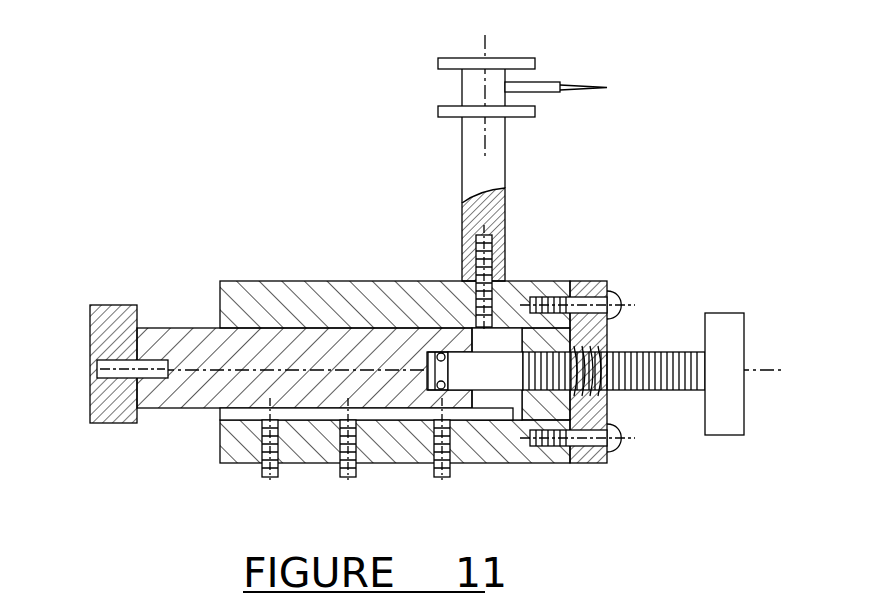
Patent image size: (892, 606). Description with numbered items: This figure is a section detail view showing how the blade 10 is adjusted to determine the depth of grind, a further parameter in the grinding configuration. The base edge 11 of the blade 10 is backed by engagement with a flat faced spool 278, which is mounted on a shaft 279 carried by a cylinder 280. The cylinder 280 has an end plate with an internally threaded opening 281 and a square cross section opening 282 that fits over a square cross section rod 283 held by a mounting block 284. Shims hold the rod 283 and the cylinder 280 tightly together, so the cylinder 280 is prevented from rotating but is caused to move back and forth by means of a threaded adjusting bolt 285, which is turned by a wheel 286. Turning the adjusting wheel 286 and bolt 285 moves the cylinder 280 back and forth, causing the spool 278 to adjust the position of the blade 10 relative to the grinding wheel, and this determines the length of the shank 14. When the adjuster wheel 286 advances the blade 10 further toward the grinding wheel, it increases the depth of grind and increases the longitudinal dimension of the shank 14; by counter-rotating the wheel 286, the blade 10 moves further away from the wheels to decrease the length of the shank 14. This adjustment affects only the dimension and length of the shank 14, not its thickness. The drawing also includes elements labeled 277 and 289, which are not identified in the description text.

The blade 10 is at (558, 72).
The base edge 11 is at (503, 87).
The shank 14 is at (577, 90).
The end cap 277 is at (583, 463).
The flat faced spool 278 is at (453, 58).
The shaft 279 is at (507, 153).
The cylinder 280 is at (547, 281).
The internally threaded opening 281 is at (597, 376).
The square cross section opening 282 is at (310, 413).
The square cross section rod 283 is at (177, 408).
The mounting block 284 is at (120, 305).
The threaded adjusting bolt 285 is at (657, 352).
The wheel 286 is at (723, 313).
The plate 289 is at (493, 413).